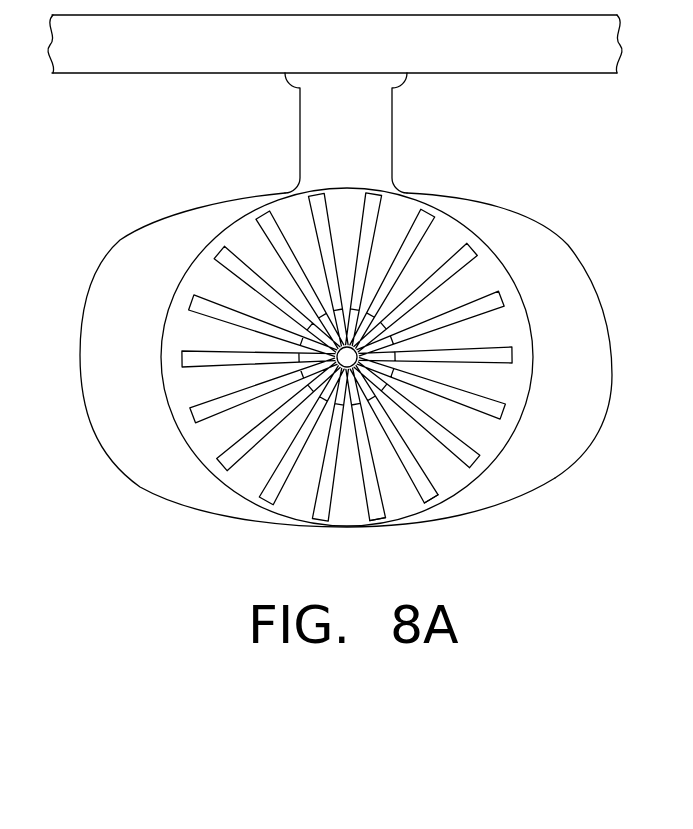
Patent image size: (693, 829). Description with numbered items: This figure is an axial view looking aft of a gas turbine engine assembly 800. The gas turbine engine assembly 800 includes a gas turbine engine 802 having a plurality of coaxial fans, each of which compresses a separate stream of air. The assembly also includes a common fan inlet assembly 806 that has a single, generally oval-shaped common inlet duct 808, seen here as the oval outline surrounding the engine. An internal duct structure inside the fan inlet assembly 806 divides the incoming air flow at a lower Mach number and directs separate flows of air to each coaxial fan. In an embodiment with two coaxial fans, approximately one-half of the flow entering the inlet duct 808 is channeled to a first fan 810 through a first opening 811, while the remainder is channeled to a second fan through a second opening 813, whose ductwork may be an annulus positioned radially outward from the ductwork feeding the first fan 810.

The gas turbine engine assembly 800 is at (146, 198).
The gas turbine engine 802 is at (442, 334).
The common fan inlet assembly 806 is at (195, 513).
The common inlet duct 808 is at (578, 465).
The first fan 810 is at (413, 217).
The first opening 811 is at (400, 504).
The second opening 813 is at (562, 268).